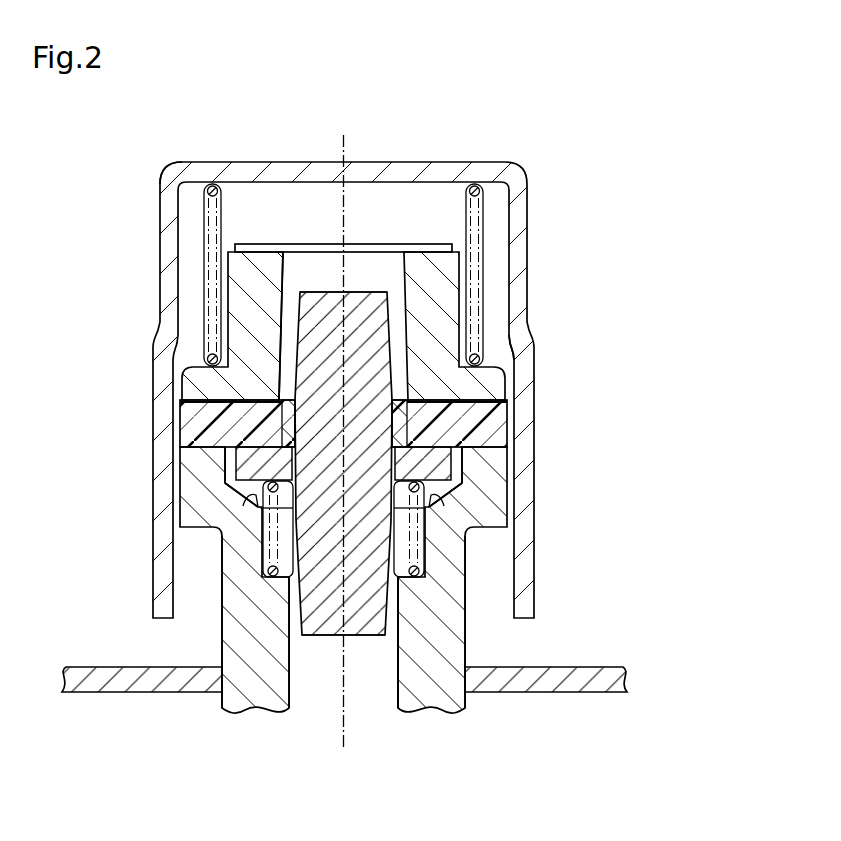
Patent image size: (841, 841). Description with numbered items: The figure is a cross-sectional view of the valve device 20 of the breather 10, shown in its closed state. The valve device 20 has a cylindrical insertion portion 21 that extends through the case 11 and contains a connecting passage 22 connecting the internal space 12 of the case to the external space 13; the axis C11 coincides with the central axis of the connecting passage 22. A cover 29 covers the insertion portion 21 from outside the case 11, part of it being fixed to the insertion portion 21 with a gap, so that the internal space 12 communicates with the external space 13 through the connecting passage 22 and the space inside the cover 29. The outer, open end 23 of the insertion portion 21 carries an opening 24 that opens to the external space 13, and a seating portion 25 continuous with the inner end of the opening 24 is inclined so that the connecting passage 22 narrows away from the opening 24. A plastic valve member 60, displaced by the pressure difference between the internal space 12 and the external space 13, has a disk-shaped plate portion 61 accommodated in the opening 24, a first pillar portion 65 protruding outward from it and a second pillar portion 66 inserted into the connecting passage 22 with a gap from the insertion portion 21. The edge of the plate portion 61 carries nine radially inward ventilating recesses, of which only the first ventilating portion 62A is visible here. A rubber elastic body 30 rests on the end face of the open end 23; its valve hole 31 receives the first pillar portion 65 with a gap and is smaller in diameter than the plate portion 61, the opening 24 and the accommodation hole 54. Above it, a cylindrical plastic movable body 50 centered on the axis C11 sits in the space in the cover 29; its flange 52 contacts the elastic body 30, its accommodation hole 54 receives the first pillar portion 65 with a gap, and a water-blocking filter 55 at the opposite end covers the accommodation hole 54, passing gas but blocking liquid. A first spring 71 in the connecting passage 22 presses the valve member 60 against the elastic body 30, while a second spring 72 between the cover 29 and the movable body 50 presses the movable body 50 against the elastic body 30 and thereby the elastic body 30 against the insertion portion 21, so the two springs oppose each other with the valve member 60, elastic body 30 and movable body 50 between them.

The valve device 10 is at (627, 148).
The valve device 20 is at (537, 167).
The cover 29 is at (163, 200).
The second spring 72 is at (207, 268).
The accommodation hole 54 is at (296, 262).
The filter 55 is at (330, 244).
The first pillar portion 65 is at (357, 300).
The movable body 50 is at (423, 258).
The valve member 60 is at (390, 355).
The flange 52 is at (483, 380).
The valve hole 31 is at (290, 412).
The elastic body 30 is at (220, 425).
The plate portion 61 is at (443, 452).
The first ventilating portion 62A is at (215, 465).
The opening 24 is at (452, 480).
The end of the insertion portion 23 is at (500, 495).
The seating portion 25 is at (250, 496).
The first spring 71 is at (268, 553).
The insertion portion 21 is at (452, 600).
The connecting passage 22 is at (397, 702).
The second pillar portion 66 is at (317, 620).
The external space 13 is at (121, 656).
The internal space 12 is at (344, 672).
The case 11 is at (573, 667).
The axis C11 is at (343, 147).